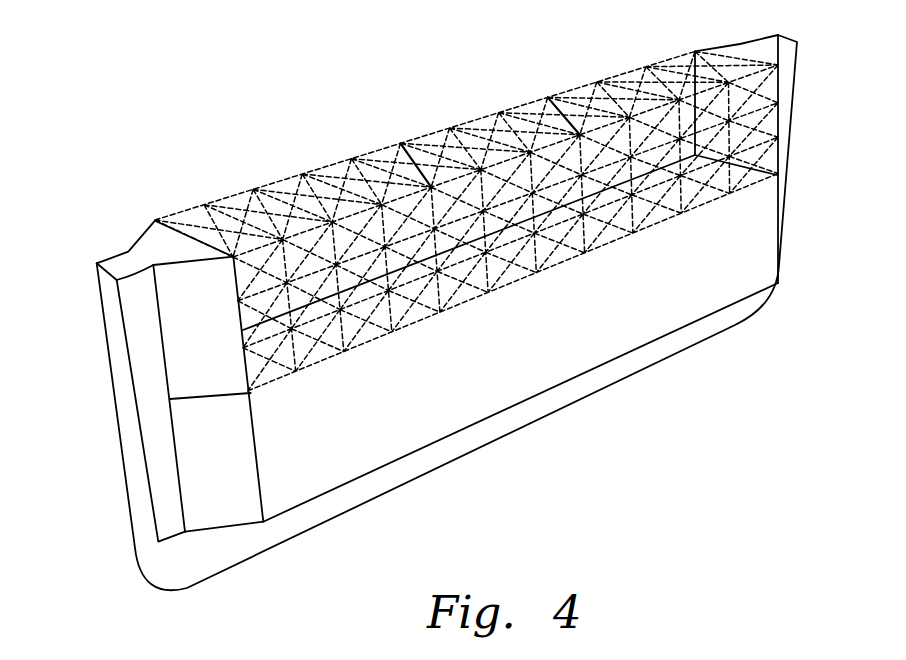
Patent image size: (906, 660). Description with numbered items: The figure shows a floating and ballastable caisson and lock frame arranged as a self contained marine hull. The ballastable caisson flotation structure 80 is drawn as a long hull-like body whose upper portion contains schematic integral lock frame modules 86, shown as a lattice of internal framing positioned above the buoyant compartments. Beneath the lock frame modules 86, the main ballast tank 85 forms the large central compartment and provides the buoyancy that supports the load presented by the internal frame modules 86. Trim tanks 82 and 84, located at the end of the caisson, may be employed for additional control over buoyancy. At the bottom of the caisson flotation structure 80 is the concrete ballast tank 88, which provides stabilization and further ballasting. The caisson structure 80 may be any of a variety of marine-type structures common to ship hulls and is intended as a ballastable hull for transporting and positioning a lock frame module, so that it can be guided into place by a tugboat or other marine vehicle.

The ballastable caisson flotation structure 80 is at (418, 95).
The trim tank 82 is at (227, 488).
The trim tank 84 is at (195, 327).
The main ballast tank 85 is at (448, 391).
The integral lock frame modules 86 is at (562, 112).
The concrete ballast tank 88 is at (715, 325).